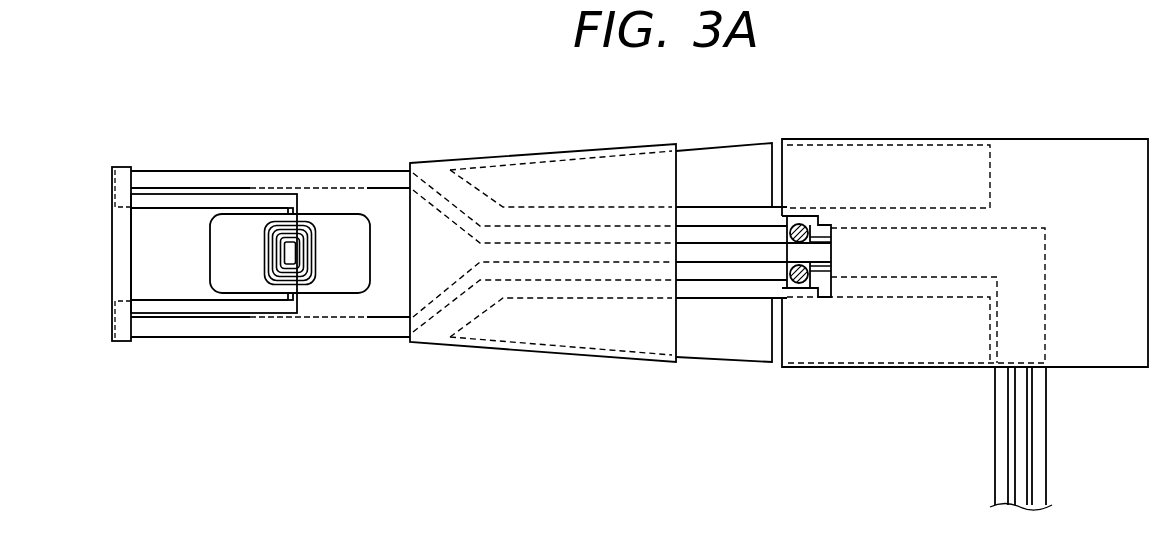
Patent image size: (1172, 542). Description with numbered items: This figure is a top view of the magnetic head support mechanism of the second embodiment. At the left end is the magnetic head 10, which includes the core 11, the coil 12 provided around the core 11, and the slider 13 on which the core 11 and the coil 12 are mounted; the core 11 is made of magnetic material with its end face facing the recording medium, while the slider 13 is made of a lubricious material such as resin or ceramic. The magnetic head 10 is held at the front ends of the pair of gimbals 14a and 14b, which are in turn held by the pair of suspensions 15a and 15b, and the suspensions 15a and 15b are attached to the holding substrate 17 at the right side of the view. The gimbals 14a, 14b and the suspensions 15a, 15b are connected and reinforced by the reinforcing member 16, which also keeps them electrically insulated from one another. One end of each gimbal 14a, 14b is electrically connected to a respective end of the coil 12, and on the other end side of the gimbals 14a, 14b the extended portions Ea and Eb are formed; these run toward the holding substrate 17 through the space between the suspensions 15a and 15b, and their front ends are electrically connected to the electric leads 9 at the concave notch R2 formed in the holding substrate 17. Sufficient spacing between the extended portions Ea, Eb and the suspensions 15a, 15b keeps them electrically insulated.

The electric leads 9 is at (820, 275).
The magnetic head 10 is at (273, 391).
The core 11 is at (278, 283).
The coil 12 is at (267, 246).
The slider 13 is at (219, 268).
The gimbal 14a is at (367, 325).
The gimbal 14b is at (369, 178).
The suspension 15a is at (760, 347).
The suspension 15b is at (753, 168).
The reinforcing member 16 is at (553, 332).
The holding substrate 17 is at (1095, 165).
The extended portion Ea is at (702, 270).
The extended portion Eb is at (698, 233).
The concave notch R2 is at (825, 215).